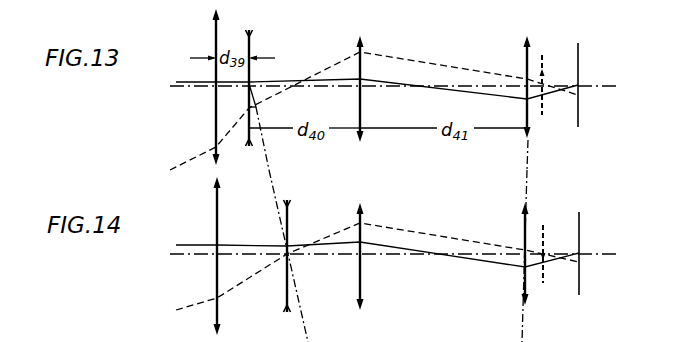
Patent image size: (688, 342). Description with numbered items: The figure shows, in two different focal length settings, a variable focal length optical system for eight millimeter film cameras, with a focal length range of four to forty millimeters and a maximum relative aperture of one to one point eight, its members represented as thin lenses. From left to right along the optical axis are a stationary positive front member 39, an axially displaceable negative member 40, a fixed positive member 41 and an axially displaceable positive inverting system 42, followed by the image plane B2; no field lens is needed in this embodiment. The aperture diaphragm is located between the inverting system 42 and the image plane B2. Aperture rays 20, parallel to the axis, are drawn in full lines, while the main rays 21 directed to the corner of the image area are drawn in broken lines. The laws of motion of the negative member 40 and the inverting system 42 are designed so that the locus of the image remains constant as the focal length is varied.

In FIG. 13, the positive front member 39 is at (214, 20).
In FIG. 14, the positive front member 39 is at (215, 195).
In FIG. 13, the negative member 40 is at (251, 50).
In FIG. 14, the negative member 40 is at (284, 219).
In FIG. 13, the fixed positive member 41 is at (362, 45).
In FIG. 14, the fixed positive member 41 is at (363, 213).
In FIG. 13, the inverting system 42 is at (524, 52).
In FIG. 14, the inverting system 42 is at (522, 222).
In FIG. 13, the aperture rays 20 is at (287, 80).
In FIG. 14, the aperture rays 20 is at (377, 254).
In FIG. 13, the main rays 21 is at (273, 93).
In FIG. 14, the main rays 21 is at (377, 266).
In FIG. 13, the image plane B2 is at (580, 57).
In FIG. 14, the image plane B2 is at (581, 230).